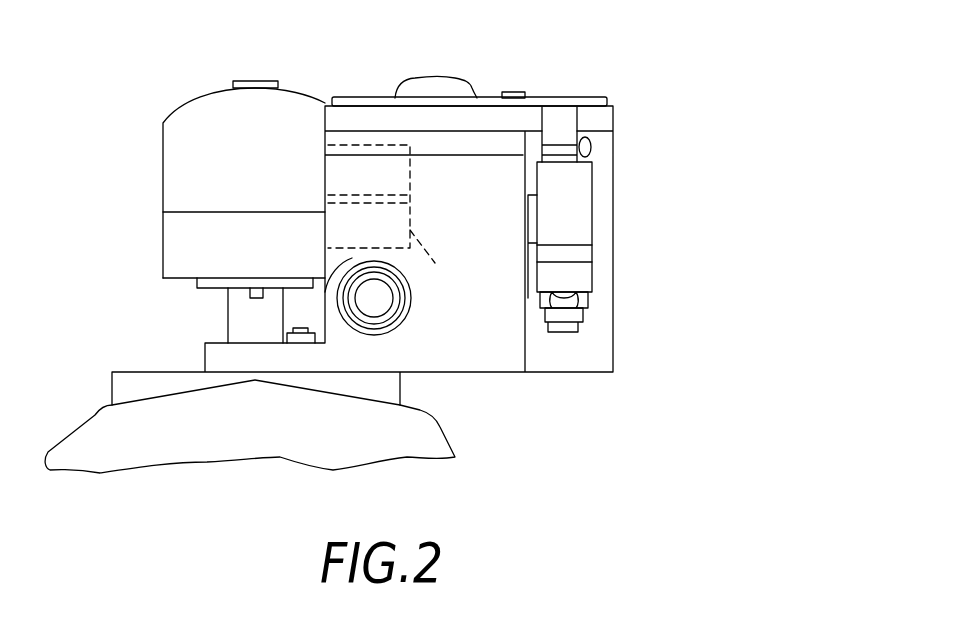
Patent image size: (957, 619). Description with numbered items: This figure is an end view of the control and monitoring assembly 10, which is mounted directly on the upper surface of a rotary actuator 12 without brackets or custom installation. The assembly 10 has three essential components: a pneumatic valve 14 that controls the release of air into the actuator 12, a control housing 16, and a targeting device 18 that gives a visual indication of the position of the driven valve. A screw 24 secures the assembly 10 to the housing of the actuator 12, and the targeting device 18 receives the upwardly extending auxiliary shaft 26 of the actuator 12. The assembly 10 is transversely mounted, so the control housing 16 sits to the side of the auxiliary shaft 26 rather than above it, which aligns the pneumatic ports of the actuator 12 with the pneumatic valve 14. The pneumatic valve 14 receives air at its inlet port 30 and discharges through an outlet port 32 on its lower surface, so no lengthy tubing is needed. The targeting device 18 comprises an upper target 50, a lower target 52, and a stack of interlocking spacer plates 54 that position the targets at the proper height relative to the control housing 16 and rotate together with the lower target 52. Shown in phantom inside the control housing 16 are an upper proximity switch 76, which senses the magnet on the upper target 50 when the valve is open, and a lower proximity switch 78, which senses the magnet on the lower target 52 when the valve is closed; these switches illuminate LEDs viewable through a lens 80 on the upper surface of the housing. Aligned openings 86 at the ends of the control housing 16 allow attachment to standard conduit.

The control and monitoring assembly 10 is at (700, 111).
The rotary actuator 12 is at (450, 439).
The pneumatic valve 14 is at (578, 222).
The control housing 16 is at (583, 102).
The targeting device 18 is at (180, 115).
The screw 24 is at (297, 340).
The auxiliary shaft 26 is at (235, 318).
The inlet port 30 is at (590, 148).
The outlet port 32 is at (582, 305).
The upper target 50 is at (170, 175).
The lower target 52 is at (170, 228).
The spacer plate 54 is at (205, 283).
The upper proximity switch 76 is at (362, 132).
The lower proximity switch 78 is at (444, 258).
The lens 80 is at (462, 78).
The aligned openings 86 is at (397, 318).